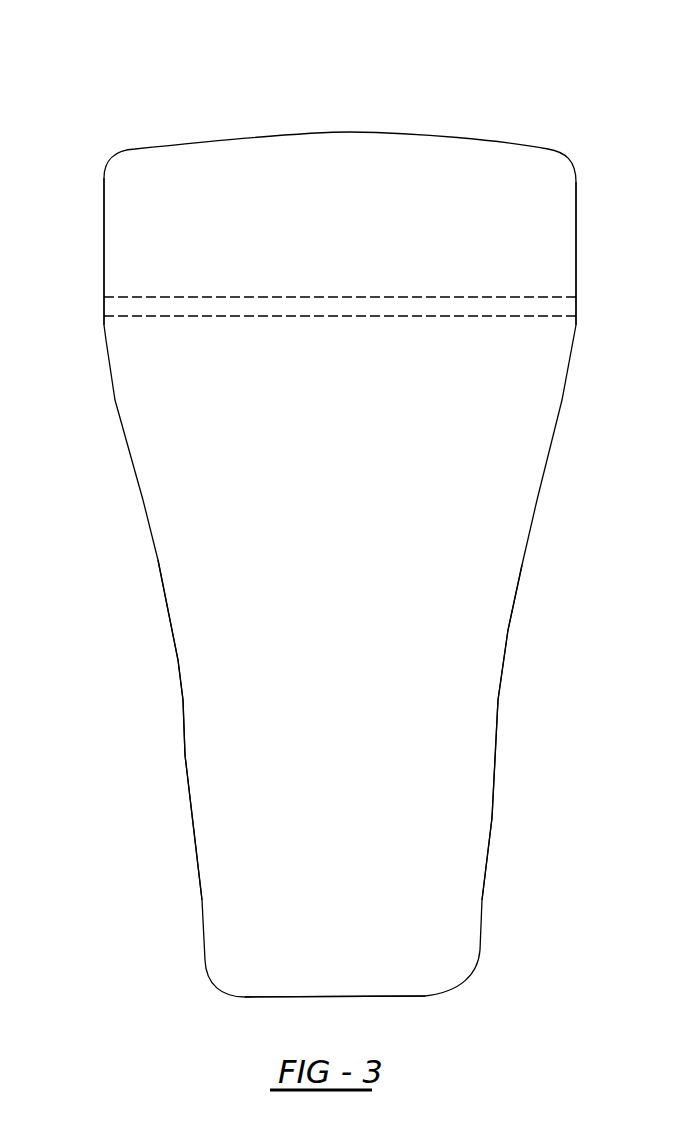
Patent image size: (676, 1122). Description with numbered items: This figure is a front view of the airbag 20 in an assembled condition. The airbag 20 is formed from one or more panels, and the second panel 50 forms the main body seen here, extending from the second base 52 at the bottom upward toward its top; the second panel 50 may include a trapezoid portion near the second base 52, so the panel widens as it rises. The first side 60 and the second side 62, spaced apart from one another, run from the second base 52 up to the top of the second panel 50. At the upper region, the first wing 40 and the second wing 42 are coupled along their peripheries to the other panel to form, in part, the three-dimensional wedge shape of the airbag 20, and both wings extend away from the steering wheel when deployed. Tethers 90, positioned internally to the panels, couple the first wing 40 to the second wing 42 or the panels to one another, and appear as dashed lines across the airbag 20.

The airbag 20 is at (547, 95).
The first wing 40 is at (104, 215).
The second wing 42 is at (576, 232).
The tethers 90 is at (500, 315).
The second panel 50 is at (240, 492).
The first side 60 is at (185, 755).
The second side 62 is at (492, 818).
The second base 52 is at (382, 997).